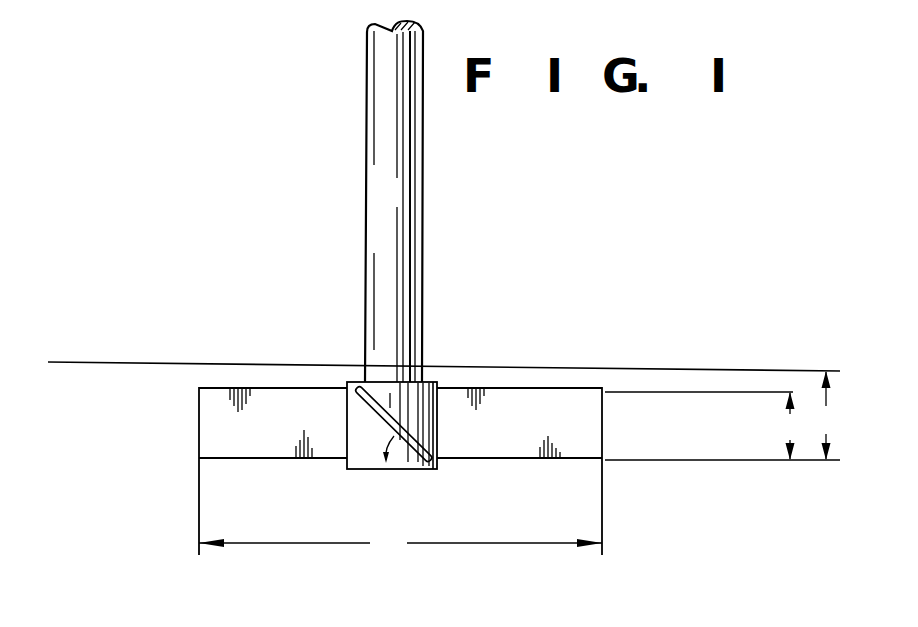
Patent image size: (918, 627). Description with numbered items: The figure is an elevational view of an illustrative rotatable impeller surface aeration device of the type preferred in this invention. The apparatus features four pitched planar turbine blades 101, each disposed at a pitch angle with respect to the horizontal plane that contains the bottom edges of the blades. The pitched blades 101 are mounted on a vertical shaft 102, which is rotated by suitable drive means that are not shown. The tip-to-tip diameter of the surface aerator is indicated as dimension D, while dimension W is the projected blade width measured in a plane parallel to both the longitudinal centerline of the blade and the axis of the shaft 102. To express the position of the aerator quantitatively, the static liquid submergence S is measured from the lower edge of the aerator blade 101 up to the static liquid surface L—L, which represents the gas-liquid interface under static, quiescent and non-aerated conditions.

The pitched planar turbine blade 101 is at (504, 450).
The vertical shaft 102 is at (423, 163).
The static liquid surface L is at (446, 368).
The projected blade width W is at (790, 426).
The static liquid submergence S is at (825, 415).
The tip-to-tip diameter D is at (400, 544).